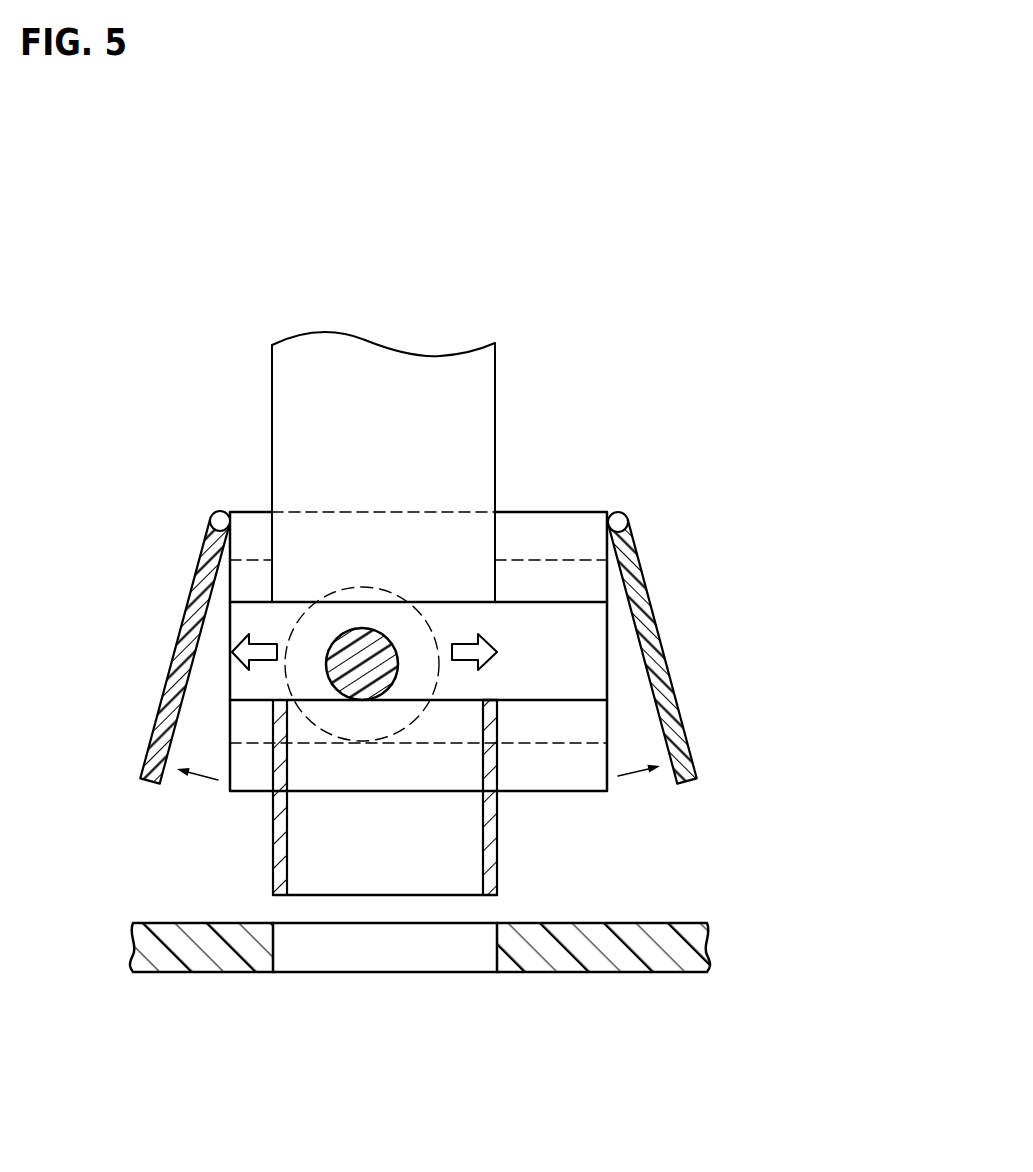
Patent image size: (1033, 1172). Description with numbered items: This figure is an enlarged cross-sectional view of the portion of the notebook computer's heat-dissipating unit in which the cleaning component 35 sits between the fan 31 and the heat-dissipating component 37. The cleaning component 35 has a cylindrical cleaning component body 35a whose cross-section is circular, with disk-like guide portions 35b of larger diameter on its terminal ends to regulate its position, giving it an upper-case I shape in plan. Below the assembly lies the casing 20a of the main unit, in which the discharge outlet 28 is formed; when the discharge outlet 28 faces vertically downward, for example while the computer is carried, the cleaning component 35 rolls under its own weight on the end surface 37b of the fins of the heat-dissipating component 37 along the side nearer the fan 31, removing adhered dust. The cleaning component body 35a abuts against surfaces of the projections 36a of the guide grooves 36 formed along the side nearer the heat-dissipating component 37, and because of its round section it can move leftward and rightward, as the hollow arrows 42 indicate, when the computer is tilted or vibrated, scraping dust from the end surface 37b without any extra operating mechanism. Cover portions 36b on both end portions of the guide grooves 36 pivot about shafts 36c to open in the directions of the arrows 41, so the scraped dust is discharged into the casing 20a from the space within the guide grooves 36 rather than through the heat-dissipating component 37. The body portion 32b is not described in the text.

The casing 20a is at (597, 957).
The discharge outlet 28 is at (458, 985).
The fan 31 is at (363, 348).
The holder body 32b is at (470, 603).
The cleaning component 35 is at (362, 848).
The cleaning component body 35a is at (363, 700).
The guide portion 35b is at (317, 693).
The guide groove 36 is at (460, 597).
The projection 36a is at (592, 724).
The cover portion 36b is at (174, 657).
The shaft 36c is at (221, 514).
The heat-dissipating component 37 is at (497, 880).
The end surface 37b is at (475, 698).
The arrows 41 is at (218, 780).
The hollow arrows 42 is at (247, 667).